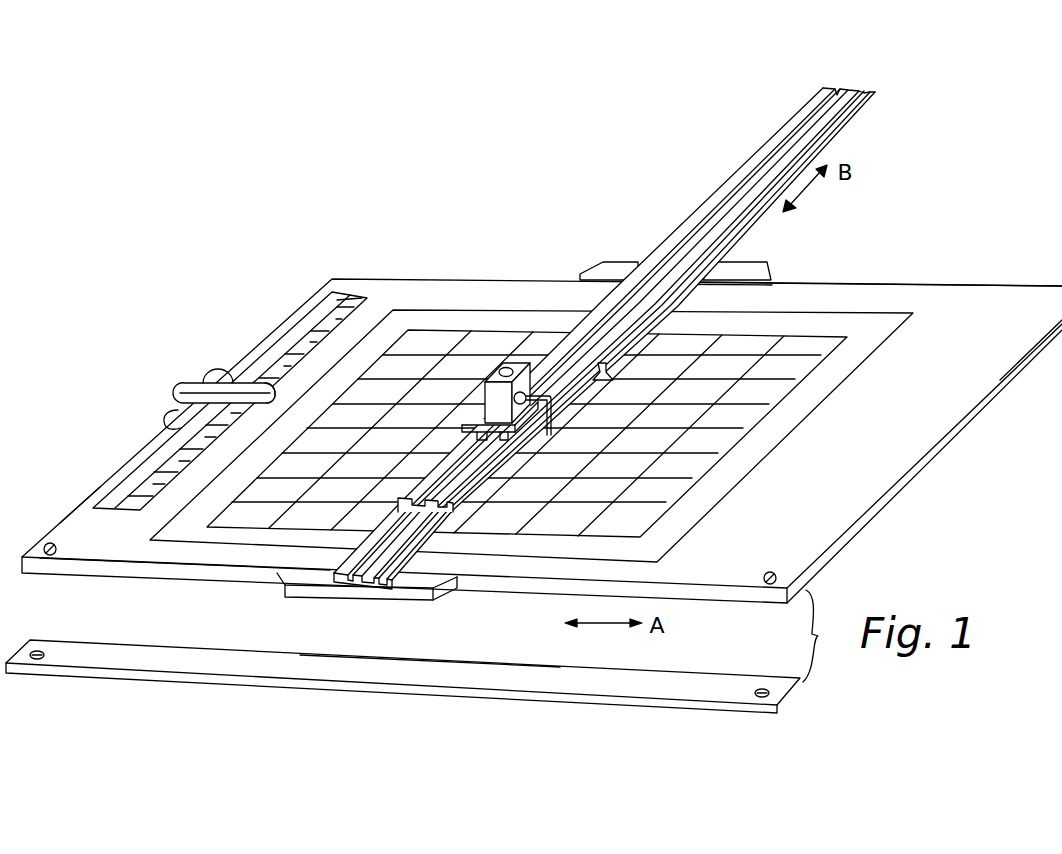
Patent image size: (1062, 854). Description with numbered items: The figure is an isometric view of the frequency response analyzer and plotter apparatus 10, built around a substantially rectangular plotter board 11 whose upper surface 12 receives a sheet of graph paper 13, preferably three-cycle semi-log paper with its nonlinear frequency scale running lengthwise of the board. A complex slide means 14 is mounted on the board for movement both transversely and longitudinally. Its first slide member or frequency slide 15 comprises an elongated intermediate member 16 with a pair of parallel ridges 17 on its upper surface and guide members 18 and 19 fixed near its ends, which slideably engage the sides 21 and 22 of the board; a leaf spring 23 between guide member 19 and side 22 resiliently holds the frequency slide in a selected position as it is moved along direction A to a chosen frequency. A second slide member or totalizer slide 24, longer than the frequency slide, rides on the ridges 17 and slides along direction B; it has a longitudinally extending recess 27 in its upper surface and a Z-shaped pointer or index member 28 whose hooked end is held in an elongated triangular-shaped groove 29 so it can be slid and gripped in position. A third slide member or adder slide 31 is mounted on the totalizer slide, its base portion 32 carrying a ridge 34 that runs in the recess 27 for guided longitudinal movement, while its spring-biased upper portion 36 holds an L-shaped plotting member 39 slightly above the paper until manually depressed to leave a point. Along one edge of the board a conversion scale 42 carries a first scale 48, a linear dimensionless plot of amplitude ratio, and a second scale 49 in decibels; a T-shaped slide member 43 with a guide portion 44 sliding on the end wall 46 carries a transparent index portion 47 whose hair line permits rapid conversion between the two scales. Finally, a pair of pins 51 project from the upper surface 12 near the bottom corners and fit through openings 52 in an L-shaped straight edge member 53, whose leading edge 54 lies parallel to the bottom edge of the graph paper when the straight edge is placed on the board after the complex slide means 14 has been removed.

The frequency response analyzer and plotter apparatus 10 is at (553, 232).
The plotter board 11 is at (928, 437).
The upper surface 12 is at (994, 378).
The graph paper 13 is at (760, 443).
The complex slide means 14 is at (613, 312).
The first slide member (frequency slide) 15 is at (336, 558).
The intermediate member 16 is at (343, 572).
The ridges 17 is at (428, 533).
The guide member 18 is at (407, 605).
The guide member 19 is at (748, 265).
The side of the board 21 is at (123, 574).
The side of the board 22 is at (1050, 284).
The leaf spring 23 is at (772, 281).
The second slide member (totalizer slide) 24 is at (810, 106).
The longitudinally extending recess 27 is at (836, 90).
The pointer or index member 28 is at (615, 370).
The triangular-shaped groove 29 is at (858, 121).
The third slide member (adder slide) 31 is at (484, 380).
The base portion 32 is at (470, 428).
The ridge 34 is at (472, 438).
The upper portion 36 is at (522, 362).
The plotting member (pen) 39 is at (556, 424).
The conversion scale 42 is at (156, 462).
The T-shaped slide member 43 is at (207, 372).
The guide portion 44 is at (168, 412).
The end wall 46 is at (72, 513).
The index portion 47 is at (240, 398).
The first scale 48 is at (300, 330).
The second scale 49 is at (340, 318).
The pins 51 is at (44, 547).
The openings 52 is at (37, 660).
The L-shaped straight edge member 53 is at (537, 668).
The leading edge 54 is at (467, 658).